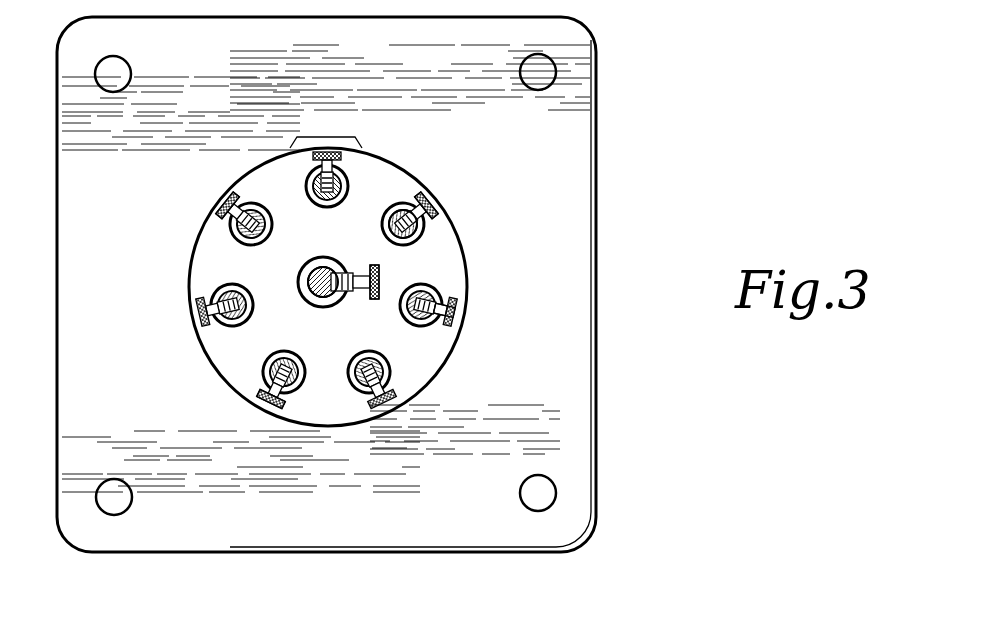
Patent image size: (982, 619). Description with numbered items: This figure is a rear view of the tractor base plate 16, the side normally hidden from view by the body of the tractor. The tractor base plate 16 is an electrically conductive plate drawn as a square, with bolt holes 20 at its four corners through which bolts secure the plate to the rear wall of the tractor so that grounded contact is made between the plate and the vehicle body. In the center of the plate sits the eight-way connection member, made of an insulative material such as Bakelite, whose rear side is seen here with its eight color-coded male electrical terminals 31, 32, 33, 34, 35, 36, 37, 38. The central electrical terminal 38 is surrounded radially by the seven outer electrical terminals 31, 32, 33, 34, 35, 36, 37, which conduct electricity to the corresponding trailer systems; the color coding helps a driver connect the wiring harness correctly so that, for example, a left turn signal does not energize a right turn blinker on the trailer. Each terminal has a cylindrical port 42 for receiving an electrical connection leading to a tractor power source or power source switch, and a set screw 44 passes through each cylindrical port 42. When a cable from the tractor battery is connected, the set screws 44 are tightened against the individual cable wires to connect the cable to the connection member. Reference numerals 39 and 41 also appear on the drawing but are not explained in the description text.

The tractor base plate 16 is at (597, 193).
The bolt holes 20 is at (130, 62).
The electrical terminal 31 is at (350, 192).
The electrical terminal 32 is at (243, 262).
The electrical terminal 33 is at (208, 298).
The electrical terminal 34 is at (268, 360).
The electrical terminal 35 is at (392, 375).
The electrical terminal 36 is at (402, 324).
The electrical terminal 37 is at (424, 222).
The central electrical terminal 38 is at (340, 296).
The terminal socket 39 is at (412, 177).
The circular connector insert 41 is at (430, 181).
The cylindrical port 42 is at (262, 200).
The set screw 44 is at (456, 302).